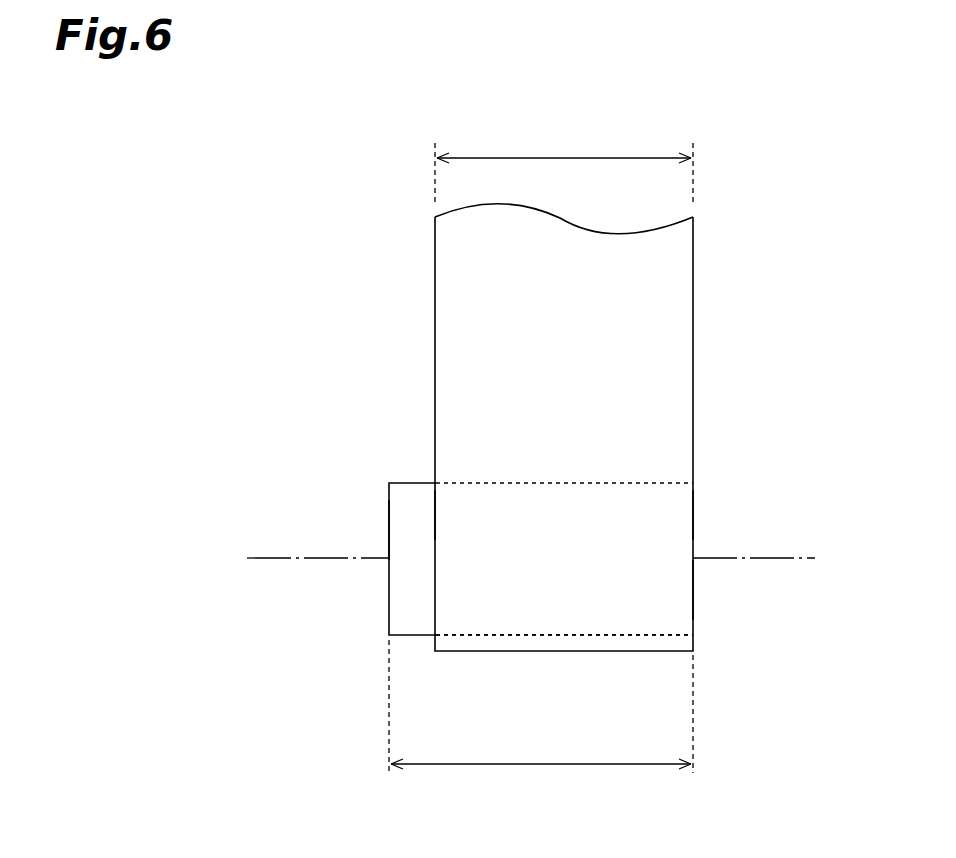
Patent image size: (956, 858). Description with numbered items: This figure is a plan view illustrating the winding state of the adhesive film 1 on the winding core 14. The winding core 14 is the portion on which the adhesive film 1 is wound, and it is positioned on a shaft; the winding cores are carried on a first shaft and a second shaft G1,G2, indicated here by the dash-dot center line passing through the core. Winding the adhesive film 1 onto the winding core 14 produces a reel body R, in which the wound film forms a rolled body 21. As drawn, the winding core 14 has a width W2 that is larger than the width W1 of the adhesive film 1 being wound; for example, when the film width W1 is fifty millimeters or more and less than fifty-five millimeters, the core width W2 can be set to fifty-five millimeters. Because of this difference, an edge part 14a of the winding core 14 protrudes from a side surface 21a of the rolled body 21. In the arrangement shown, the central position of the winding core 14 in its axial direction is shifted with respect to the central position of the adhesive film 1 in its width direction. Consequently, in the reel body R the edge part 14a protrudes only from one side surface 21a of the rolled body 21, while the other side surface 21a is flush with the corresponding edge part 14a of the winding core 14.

The adhesive film 1 is at (460, 327).
The winding core 14 is at (510, 607).
The rolled body 21 is at (595, 608).
The edge part 14a is at (389, 525).
The side surface 21a is at (433, 519).
The reel body R is at (743, 467).
The first shaft and second shaft G1,G2 is at (262, 558).
The width of the adhesive film W1 is at (564, 164).
The width of the winding core W2 is at (541, 721).